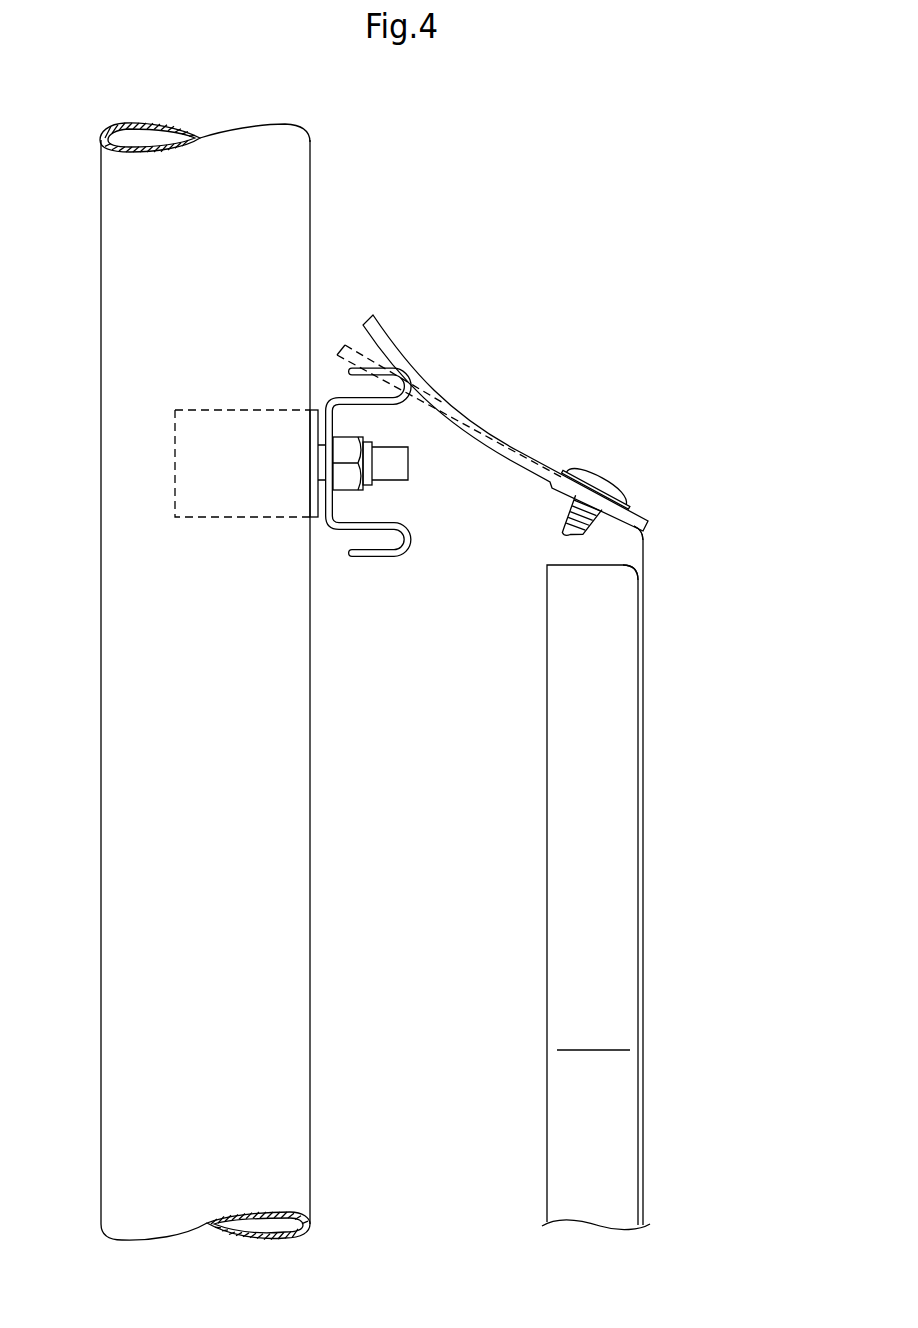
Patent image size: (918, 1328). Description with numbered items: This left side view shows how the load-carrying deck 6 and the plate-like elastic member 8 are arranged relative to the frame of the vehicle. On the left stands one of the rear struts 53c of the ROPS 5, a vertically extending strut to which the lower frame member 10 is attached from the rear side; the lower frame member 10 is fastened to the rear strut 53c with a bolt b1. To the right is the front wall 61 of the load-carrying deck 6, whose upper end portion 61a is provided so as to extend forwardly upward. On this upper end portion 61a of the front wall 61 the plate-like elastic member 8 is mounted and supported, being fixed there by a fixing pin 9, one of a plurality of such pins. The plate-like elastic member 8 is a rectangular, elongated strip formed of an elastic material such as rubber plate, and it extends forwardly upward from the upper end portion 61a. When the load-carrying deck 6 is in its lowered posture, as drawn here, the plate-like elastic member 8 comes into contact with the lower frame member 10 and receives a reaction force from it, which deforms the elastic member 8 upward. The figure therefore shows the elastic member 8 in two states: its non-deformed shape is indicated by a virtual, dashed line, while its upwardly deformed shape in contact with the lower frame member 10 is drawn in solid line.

The plate-like elastic member 8 is at (454, 380).
The fixing pin 9 is at (603, 481).
The lower frame member 10 is at (377, 557).
The bolt b1 is at (398, 468).
The rear strut 53c is at (256, 681).
The duct 5 is at (300, 813).
The front wall 61 is at (682, 878).
The load-carrying deck 6 is at (682, 878).
The upper end portion 61a is at (617, 527).